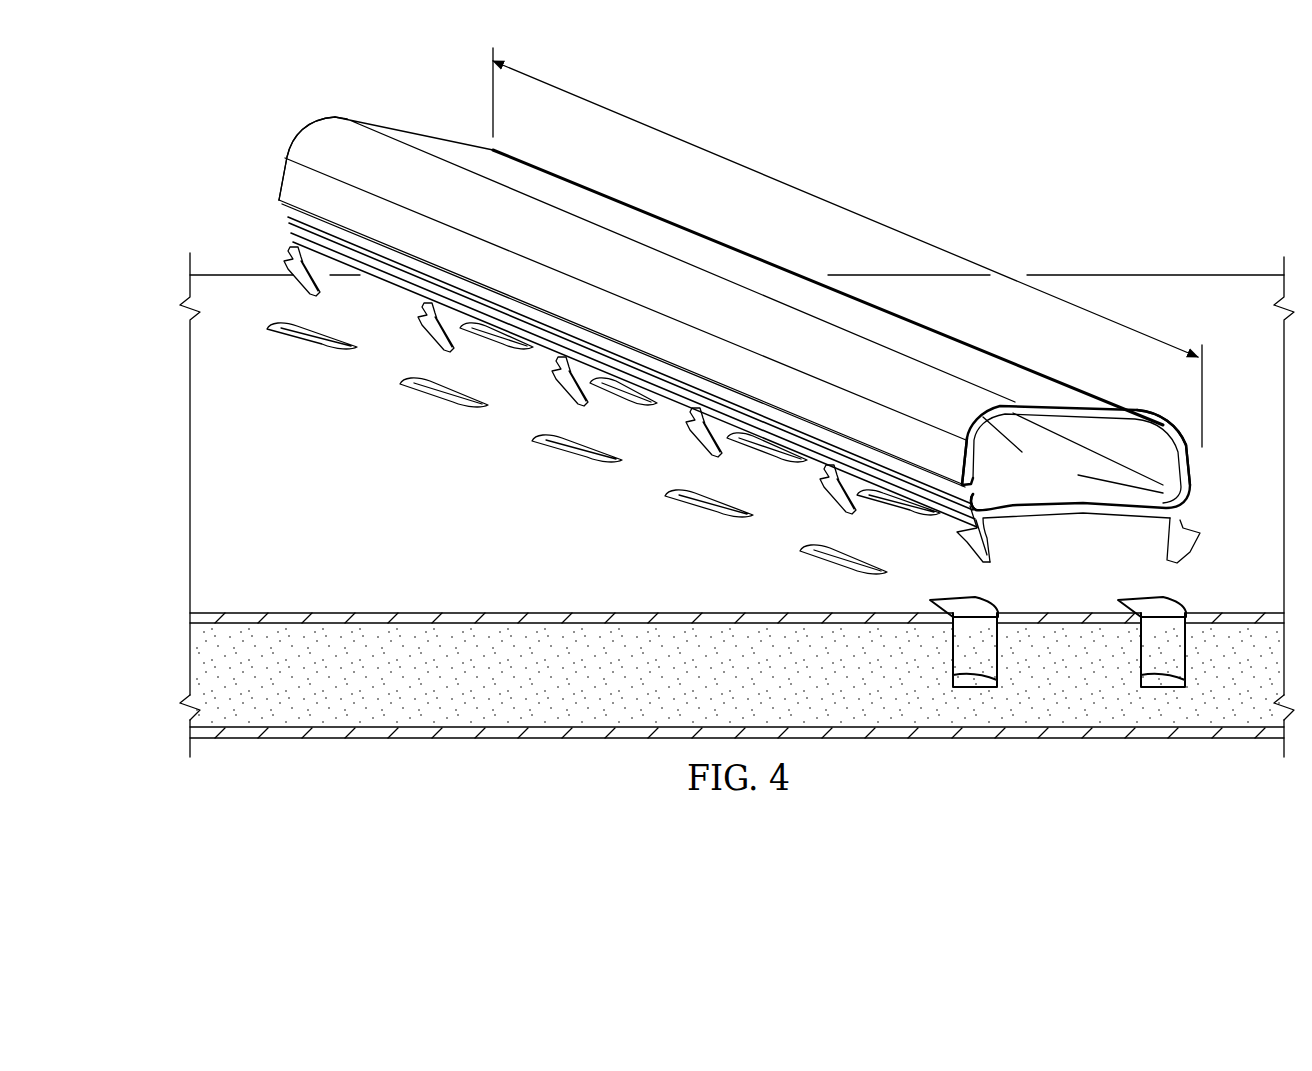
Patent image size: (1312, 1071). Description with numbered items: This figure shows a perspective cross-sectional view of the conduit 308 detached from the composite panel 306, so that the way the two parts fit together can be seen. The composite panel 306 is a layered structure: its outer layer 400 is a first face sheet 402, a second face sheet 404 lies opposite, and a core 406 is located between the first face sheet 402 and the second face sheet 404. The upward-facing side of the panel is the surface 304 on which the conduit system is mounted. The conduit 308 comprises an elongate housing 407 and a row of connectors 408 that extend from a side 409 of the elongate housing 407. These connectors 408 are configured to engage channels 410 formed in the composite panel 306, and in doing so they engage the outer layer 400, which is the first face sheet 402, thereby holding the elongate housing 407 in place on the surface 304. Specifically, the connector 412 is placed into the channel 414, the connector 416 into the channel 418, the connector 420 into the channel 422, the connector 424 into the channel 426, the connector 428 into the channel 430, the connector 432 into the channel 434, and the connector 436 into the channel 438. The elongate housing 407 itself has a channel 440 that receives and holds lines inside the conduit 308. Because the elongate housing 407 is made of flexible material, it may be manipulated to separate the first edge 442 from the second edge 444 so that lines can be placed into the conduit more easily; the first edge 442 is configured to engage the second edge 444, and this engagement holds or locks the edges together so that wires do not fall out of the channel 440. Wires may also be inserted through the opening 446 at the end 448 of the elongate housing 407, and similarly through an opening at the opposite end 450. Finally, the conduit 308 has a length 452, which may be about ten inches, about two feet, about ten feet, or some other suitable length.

The surface 304 is at (339, 529).
The composite panel 306 is at (1196, 273).
The conduit 308 is at (672, 213).
The outer layer 400 is at (190, 540).
The first face sheet 402 is at (282, 613).
The second face sheet 404 is at (275, 738).
The core 406 is at (760, 686).
The elongate housing 407 is at (770, 270).
The connectors 408 is at (386, 368).
The side 409 is at (1110, 514).
The channels 410 is at (515, 473).
The connector 412 is at (306, 278).
The channel 414 is at (293, 338).
The connector 416 is at (430, 335).
The channel 418 is at (424, 393).
The connector 420 is at (565, 392).
The channel 422 is at (558, 450).
The connector 424 is at (698, 447).
The channel 426 is at (690, 504).
The connector 428 is at (832, 500).
The channel 430 is at (822, 560).
The connector 432 is at (965, 548).
The channel 434 is at (997, 657).
The connector 436 is at (1190, 555).
The channel 438 is at (1185, 657).
The channel 440 is at (1170, 481).
The first edge 442 is at (985, 478).
The second edge 444 is at (985, 515).
The opening 446 is at (1180, 432).
The end 448 is at (1200, 465).
The end 450 is at (280, 180).
The length 452 is at (843, 207).